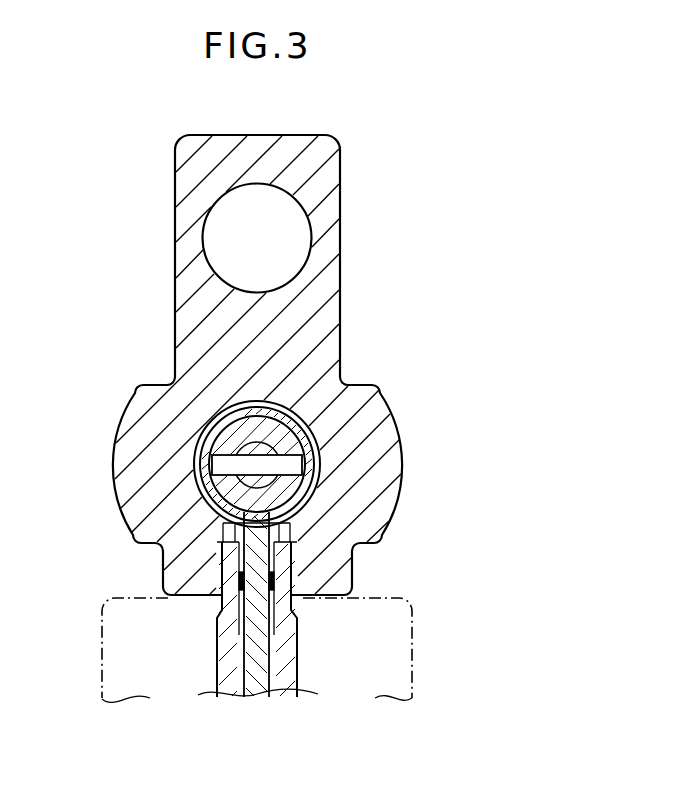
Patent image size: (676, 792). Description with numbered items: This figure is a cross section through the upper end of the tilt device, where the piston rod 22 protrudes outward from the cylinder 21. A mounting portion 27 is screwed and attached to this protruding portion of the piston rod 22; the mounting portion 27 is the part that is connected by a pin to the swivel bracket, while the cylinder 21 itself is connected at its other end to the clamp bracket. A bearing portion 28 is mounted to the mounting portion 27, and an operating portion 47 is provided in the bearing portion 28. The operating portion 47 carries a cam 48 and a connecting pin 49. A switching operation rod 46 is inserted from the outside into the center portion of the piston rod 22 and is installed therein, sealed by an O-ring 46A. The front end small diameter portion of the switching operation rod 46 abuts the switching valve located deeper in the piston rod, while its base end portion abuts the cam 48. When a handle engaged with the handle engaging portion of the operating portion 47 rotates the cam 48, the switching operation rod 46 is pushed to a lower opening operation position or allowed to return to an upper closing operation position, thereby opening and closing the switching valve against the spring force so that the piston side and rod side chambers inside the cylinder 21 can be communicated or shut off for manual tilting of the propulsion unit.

The cylinder 21 is at (422, 660).
The piston rod 22 is at (302, 680).
The mounting portion 27 is at (181, 153).
The bearing portion 28 is at (214, 416).
The switching operation rod 46 is at (260, 641).
The O-ring 46A is at (265, 576).
The operating portion 47 is at (290, 408).
The cam 48 is at (297, 493).
The connecting pin 49 is at (297, 467).